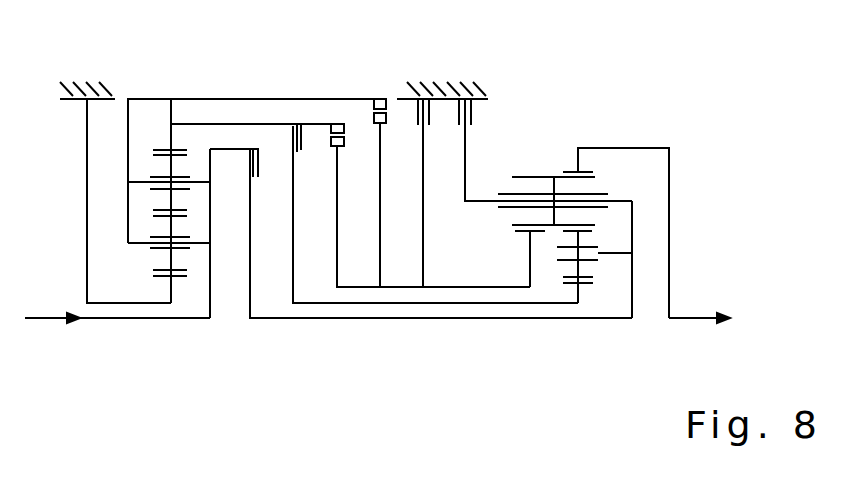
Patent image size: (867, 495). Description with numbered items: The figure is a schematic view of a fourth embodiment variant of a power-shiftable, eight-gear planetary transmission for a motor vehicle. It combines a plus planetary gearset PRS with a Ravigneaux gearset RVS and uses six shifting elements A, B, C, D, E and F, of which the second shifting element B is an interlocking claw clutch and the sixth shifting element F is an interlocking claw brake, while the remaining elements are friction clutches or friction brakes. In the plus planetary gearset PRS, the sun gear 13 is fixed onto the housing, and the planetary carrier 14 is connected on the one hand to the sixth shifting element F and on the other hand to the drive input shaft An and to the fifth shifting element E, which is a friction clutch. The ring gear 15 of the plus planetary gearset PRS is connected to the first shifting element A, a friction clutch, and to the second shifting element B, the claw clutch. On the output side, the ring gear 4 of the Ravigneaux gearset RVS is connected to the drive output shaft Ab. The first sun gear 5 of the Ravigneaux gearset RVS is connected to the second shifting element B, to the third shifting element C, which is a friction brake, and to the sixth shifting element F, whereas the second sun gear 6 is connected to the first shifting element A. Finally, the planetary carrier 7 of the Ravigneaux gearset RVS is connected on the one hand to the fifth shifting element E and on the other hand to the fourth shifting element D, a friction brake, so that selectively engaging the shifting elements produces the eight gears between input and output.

The ring gear 4 is at (580, 163).
The first sun gear 5 is at (528, 257).
The second sun gear 6 is at (578, 292).
The planetary carrier 7 is at (632, 238).
The sun gear 13 is at (155, 303).
The planetary carrier 14 is at (128, 167).
The ring gear 15 is at (171, 137).
The plus planetary gearset PRS is at (171, 100).
The Ravigneaux gearset RVS is at (562, 150).
The first shifting element A is at (424, 213).
The second shifting element B is at (421, 205).
The third shifting element C is at (414, 193).
The fourth shifting element D is at (537, 150).
The fifth shifting element E is at (421, 233).
The sixth shifting element F is at (372, 193).
The drive input shaft An is at (117, 307).
The drive output shaft Ab is at (699, 307).